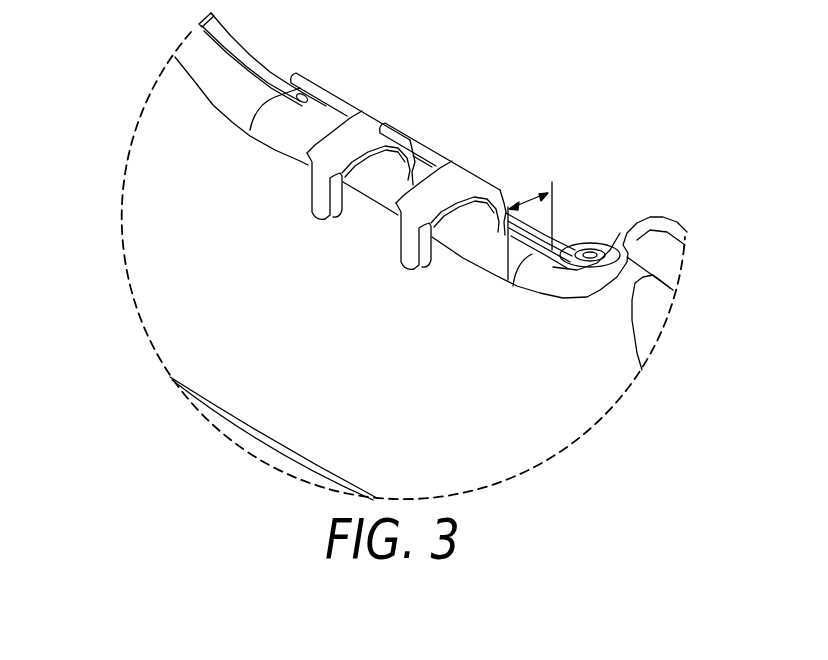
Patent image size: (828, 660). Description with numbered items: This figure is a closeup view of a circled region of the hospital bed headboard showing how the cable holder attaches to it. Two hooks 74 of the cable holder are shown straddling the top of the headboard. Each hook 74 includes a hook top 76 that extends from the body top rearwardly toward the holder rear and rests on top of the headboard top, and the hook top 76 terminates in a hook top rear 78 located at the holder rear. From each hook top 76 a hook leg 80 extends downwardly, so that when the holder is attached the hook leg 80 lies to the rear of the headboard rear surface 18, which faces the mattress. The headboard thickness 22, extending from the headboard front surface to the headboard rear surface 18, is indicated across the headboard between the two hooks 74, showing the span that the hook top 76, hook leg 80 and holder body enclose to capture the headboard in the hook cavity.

The headboard rear surface 18 is at (590, 397).
The headboard thickness 22 is at (524, 195).
The hook 74 is at (437, 181).
The hook top 76 is at (362, 138).
The hook top rear 78 is at (322, 153).
The hook leg 80 is at (320, 194).